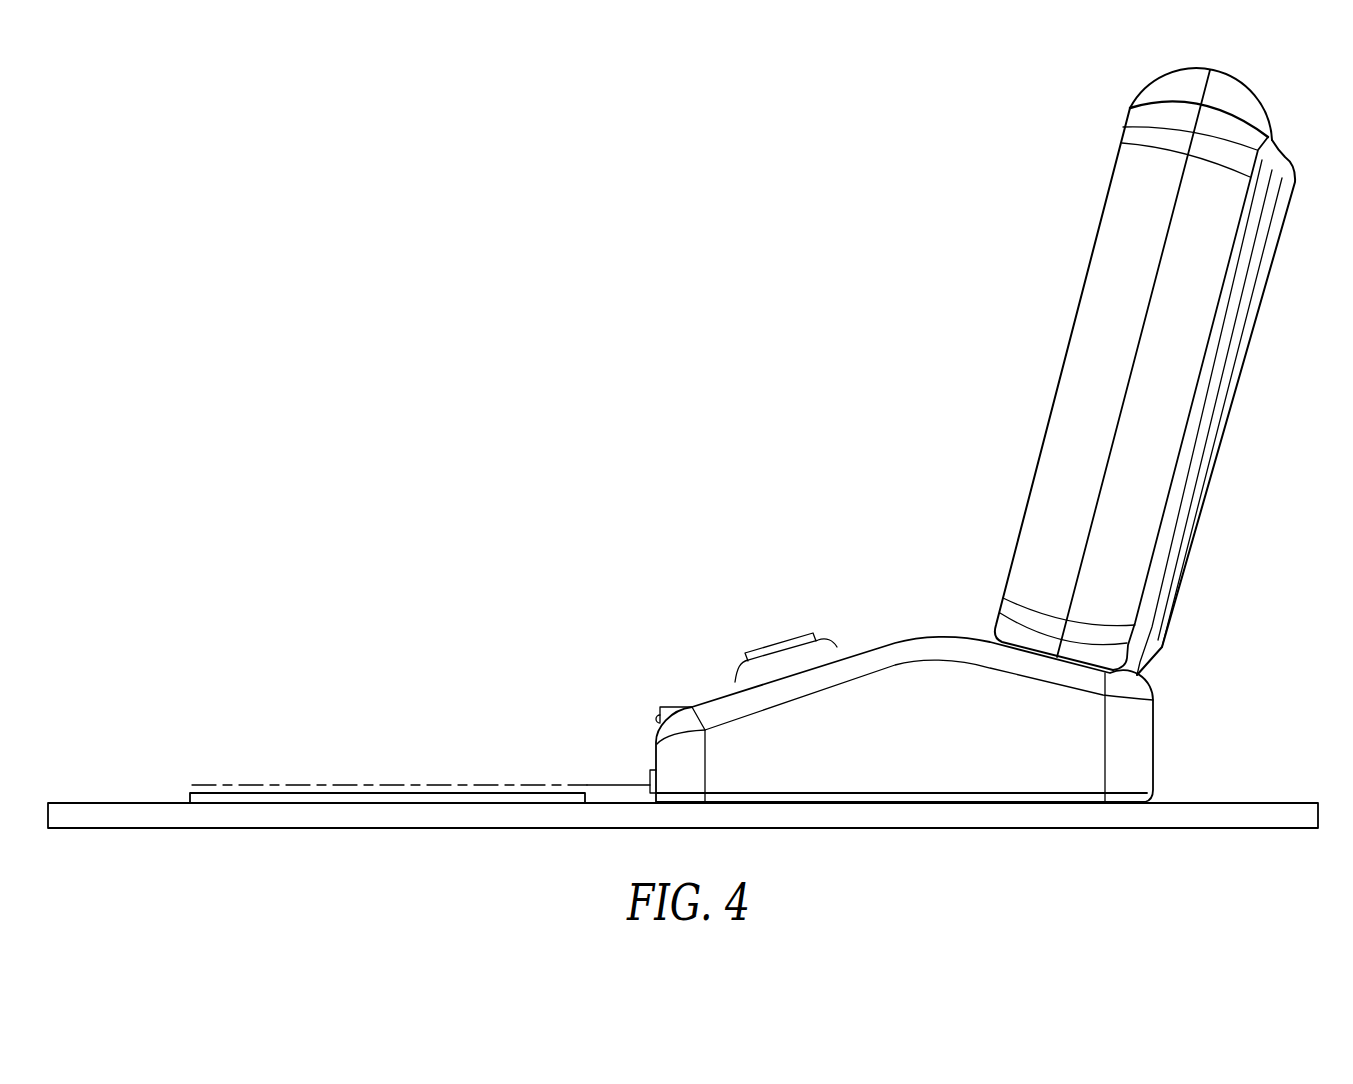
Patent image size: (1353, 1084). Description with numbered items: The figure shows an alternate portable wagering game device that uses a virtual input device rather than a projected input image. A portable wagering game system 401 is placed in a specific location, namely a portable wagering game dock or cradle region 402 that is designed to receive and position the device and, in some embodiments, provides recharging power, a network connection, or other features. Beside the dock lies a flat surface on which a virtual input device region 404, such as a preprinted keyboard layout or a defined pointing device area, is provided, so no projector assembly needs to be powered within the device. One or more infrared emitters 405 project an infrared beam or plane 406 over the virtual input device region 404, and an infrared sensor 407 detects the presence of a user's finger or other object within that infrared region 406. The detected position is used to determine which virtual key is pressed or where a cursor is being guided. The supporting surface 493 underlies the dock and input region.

The portable wagering game system 401 is at (1062, 365).
The portable wagering game dock or cradle region 402 is at (1157, 746).
The virtual input device region 404 is at (387, 792).
The infrared emitter 405 is at (650, 784).
The infrared beam or plane 406 is at (517, 784).
The infrared sensor 407 is at (673, 706).
The supporting surface 493 is at (117, 803).